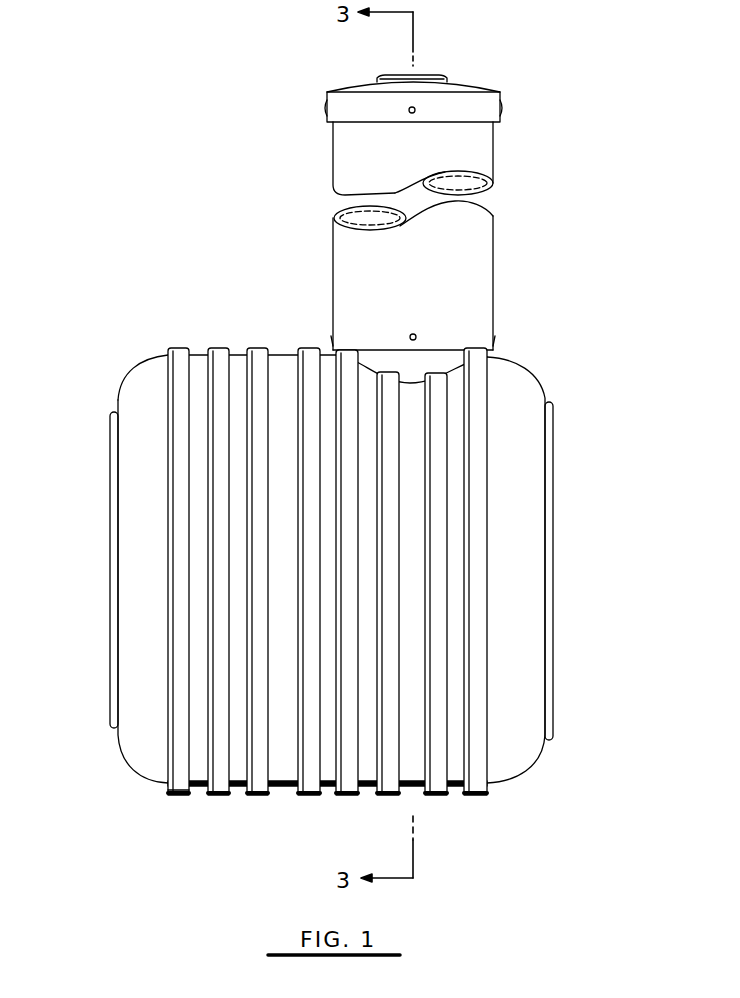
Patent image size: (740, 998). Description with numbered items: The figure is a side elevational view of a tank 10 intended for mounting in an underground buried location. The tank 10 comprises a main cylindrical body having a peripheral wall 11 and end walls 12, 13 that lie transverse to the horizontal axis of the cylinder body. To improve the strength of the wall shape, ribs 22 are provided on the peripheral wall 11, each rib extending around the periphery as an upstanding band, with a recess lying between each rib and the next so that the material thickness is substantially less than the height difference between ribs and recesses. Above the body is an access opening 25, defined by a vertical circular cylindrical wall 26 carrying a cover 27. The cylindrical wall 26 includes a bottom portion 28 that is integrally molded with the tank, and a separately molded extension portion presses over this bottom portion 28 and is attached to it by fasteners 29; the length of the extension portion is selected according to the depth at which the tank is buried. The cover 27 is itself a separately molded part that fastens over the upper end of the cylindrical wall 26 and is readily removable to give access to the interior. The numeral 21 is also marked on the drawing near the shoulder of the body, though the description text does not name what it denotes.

The tank 10 is at (155, 318).
The peripheral wall 11 is at (183, 360).
The end wall 12 is at (108, 598).
The end wall 13 is at (555, 545).
The shoulder 21 is at (122, 395).
The ribs 22 is at (213, 797).
The access opening 25 is at (515, 221).
The vertical circular cylindrical wall 26 is at (475, 305).
The cover 27 is at (468, 83).
The bottom portion 28 is at (375, 357).
The fasteners 29 is at (333, 340).